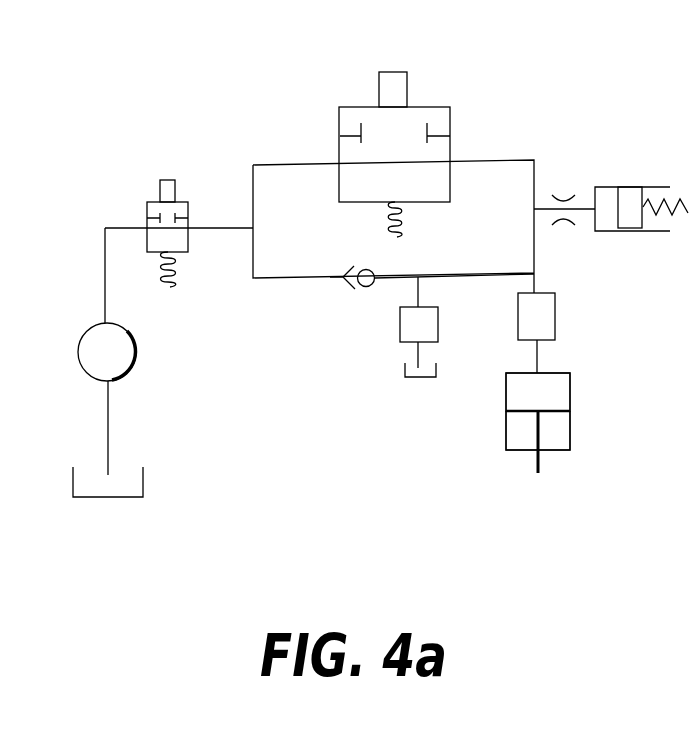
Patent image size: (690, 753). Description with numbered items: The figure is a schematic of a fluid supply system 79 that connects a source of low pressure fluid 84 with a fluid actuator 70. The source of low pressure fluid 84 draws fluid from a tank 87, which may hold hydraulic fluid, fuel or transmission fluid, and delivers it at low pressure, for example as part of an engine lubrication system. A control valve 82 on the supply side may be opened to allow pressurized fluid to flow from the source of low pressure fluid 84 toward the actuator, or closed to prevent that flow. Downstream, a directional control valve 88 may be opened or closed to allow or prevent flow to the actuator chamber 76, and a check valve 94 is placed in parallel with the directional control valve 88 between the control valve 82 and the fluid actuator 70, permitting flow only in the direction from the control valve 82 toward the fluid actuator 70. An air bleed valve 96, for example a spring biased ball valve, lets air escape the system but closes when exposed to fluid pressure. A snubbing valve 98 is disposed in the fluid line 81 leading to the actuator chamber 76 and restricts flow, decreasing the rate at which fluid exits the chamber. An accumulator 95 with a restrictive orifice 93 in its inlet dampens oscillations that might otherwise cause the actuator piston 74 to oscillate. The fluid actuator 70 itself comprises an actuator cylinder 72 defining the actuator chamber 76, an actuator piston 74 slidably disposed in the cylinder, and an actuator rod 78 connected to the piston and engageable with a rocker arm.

The fluid actuator 70 is at (576, 373).
The actuator cylinder 72 is at (512, 440).
The actuator piston 74 is at (570, 423).
The actuator chamber 76 is at (512, 403).
The actuator rod 78 is at (542, 460).
The fluid supply system 79 is at (257, 134).
The fluid line 81 is at (534, 276).
The control valve 82 is at (134, 198).
The source of low pressure fluid 84 is at (137, 348).
The tank 87 is at (110, 498).
The directional control valve 88 is at (454, 131).
The restrictive orifice 93 is at (558, 201).
The check valve 94 is at (350, 287).
The accumulator 95 is at (635, 187).
The air bleed valve 96 is at (438, 323).
The snubbing valve 98 is at (555, 317).